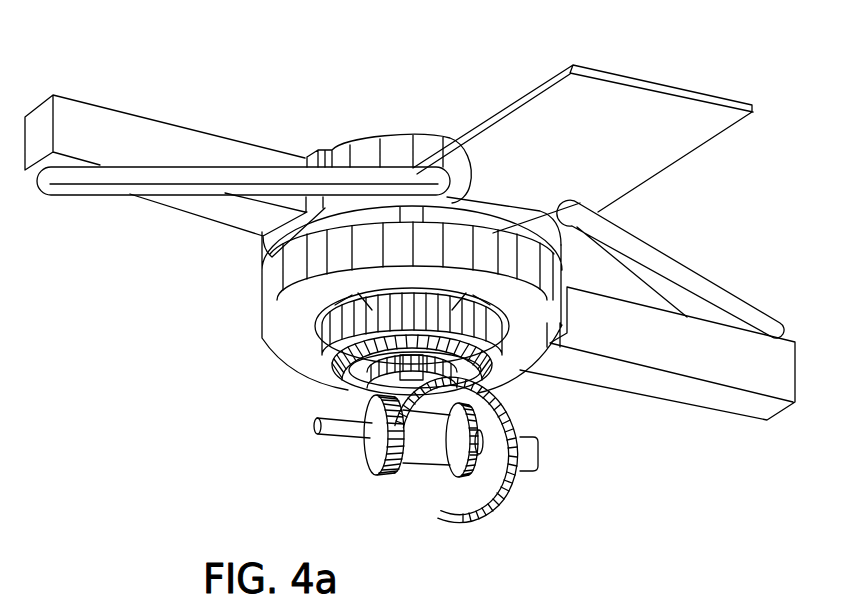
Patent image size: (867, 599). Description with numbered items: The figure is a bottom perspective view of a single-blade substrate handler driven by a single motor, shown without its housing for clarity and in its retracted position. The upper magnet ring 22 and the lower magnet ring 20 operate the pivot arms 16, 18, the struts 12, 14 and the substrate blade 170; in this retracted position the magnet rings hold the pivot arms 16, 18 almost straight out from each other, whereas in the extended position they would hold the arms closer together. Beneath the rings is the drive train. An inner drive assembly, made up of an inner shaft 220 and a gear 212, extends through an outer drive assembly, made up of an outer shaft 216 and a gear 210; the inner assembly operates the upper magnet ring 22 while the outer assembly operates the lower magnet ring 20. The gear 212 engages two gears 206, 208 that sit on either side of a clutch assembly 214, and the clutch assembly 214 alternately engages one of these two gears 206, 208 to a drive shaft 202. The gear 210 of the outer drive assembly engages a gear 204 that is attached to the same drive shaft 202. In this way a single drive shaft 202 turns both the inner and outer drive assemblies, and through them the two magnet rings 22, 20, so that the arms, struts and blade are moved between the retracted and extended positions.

The strut 12 is at (703, 286).
The strut 14 is at (268, 167).
The pivot arm 16 is at (717, 410).
The pivot arm 18 is at (113, 104).
The lower magnet ring 20 is at (265, 345).
The upper magnet ring 22 is at (392, 136).
The substrate blade 170 is at (628, 73).
The drive shaft 202 is at (347, 436).
The gear 204 is at (507, 513).
The gear 206 is at (448, 483).
The gear 208 is at (387, 470).
The gear 210 is at (332, 370).
The gear 212 is at (505, 405).
The clutch assembly 214 is at (411, 480).
The outer shaft 216 is at (322, 328).
The inner shaft 220 is at (468, 178).